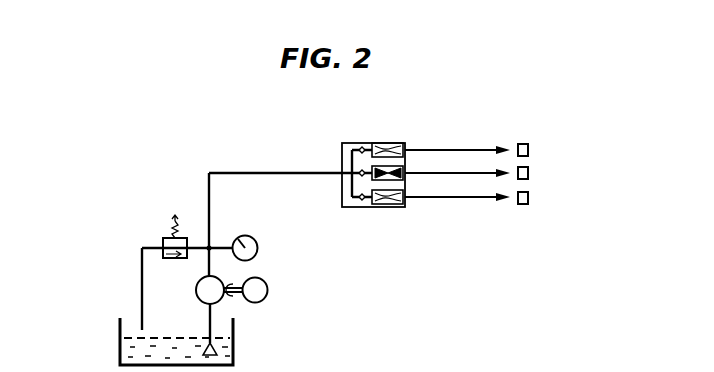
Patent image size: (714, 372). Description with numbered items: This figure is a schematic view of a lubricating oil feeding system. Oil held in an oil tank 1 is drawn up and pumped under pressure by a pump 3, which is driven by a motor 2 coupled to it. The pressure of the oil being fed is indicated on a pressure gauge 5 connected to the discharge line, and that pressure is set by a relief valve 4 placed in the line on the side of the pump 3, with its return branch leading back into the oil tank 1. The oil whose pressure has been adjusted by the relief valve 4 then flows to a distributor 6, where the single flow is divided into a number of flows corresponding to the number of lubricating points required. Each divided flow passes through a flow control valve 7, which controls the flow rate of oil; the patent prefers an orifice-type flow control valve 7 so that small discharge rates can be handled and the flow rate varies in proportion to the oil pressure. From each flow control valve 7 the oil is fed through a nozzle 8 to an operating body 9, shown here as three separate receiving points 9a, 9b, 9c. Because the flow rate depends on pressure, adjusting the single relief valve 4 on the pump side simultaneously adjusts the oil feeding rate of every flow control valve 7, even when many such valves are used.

The oil tank 1 is at (118, 328).
The motor 2 is at (268, 293).
The pump 3 is at (198, 295).
The relief valve 4 is at (165, 238).
The pressure gauge 5 is at (255, 238).
The distributor 6 is at (342, 148).
The flow control valve 7 is at (395, 143).
The nozzle 8 is at (500, 147).
The operating body 9 is at (549, 147).
The first nozzle 9a is at (528, 148).
The second nozzle 9b is at (528, 173).
The third nozzle 9c is at (528, 197).